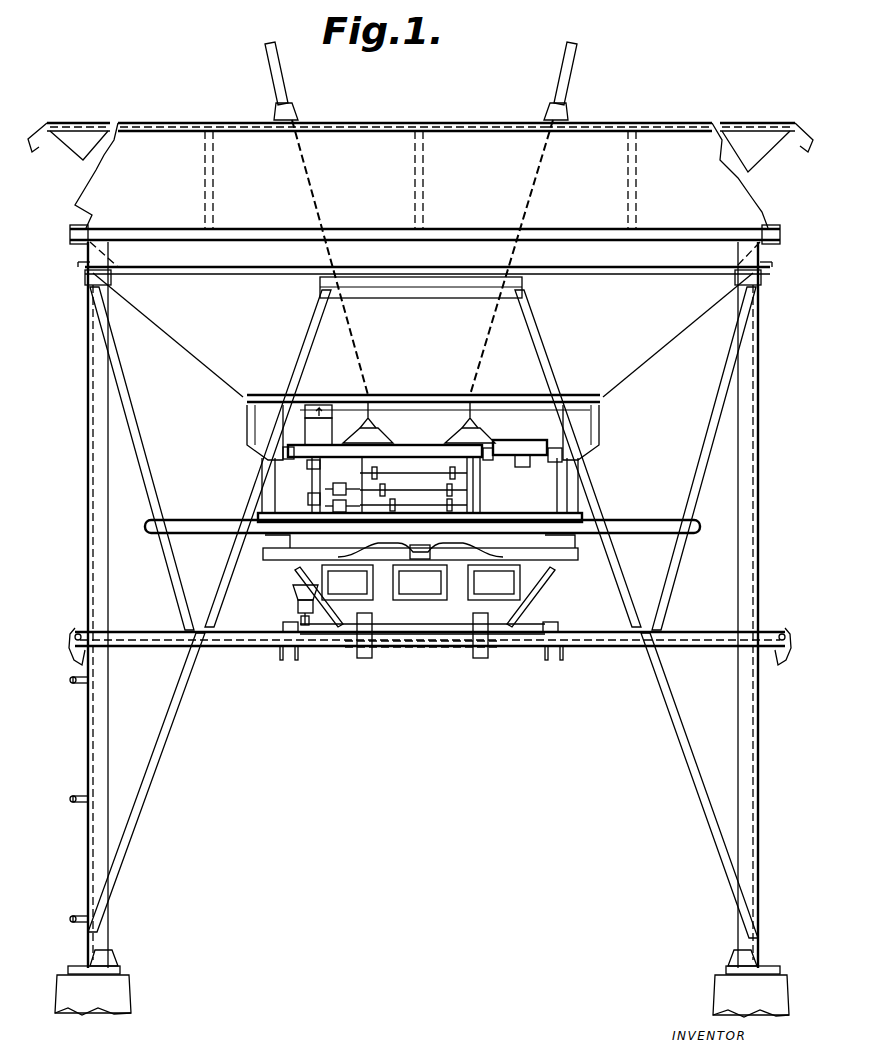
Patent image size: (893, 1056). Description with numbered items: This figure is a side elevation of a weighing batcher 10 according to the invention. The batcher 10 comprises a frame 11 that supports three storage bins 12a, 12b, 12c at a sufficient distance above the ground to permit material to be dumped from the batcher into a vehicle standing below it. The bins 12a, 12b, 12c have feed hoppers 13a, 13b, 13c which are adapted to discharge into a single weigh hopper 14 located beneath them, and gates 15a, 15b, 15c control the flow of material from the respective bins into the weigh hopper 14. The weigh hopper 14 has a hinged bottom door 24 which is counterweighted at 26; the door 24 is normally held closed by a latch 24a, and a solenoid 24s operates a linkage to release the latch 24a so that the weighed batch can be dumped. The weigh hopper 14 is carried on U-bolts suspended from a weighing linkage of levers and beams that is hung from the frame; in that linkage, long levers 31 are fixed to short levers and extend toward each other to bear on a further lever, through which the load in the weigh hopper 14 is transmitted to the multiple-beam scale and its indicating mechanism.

The batcher 10 is at (445, 718).
The frame 11 is at (105, 737).
The storage bin 12a is at (162, 152).
The storage bin 12b is at (389, 152).
The storage bin 12c is at (608, 152).
The feed hopper 13a is at (282, 432).
The feed hopper 13b is at (385, 440).
The feed hopper 13c is at (533, 428).
The weigh hopper 14 is at (500, 610).
The gate 15a is at (298, 455).
The gate 15b is at (400, 465).
The gate 15c is at (560, 462).
The bottom door 24 is at (338, 650).
The latch 24a is at (470, 655).
The solenoid 24s is at (298, 607).
The counterweight 26 is at (283, 625).
The long lever 31 is at (358, 556).